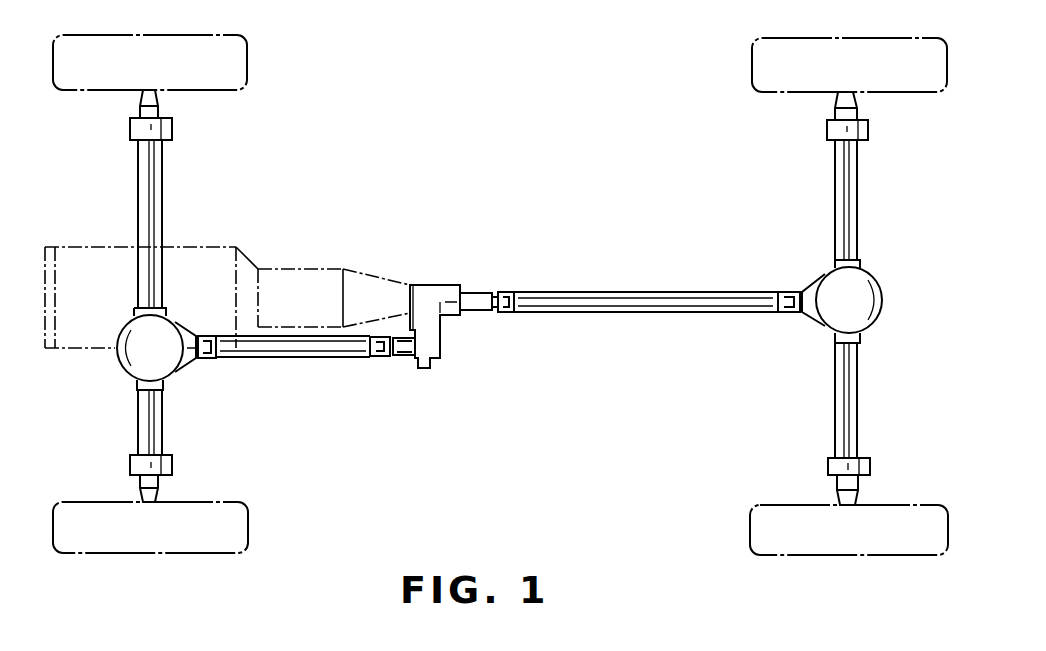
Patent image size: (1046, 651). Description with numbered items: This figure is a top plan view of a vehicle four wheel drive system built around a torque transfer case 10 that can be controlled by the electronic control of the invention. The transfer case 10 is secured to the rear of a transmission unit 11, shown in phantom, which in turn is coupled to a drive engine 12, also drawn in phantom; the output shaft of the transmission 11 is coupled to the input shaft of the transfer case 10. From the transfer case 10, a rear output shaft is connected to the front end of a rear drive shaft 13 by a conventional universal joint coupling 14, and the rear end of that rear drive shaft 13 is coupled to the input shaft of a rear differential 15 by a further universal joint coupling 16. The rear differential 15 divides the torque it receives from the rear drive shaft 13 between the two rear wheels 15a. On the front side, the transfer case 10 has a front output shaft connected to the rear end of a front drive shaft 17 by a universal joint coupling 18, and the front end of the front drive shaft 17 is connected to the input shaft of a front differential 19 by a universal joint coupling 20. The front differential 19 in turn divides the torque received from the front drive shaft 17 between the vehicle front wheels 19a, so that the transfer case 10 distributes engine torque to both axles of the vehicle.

The torque transfer case 10 is at (442, 280).
The transmission unit 11 is at (298, 268).
The drive engine 12 is at (207, 247).
The rear drive shaft 13 is at (620, 312).
The universal joint coupling 14 is at (502, 290).
The rear differential 15 is at (875, 290).
The rear wheels 15a is at (752, 62).
The universal joint coupling 16 is at (788, 290).
The front drive shaft 17 is at (340, 358).
The universal joint coupling 18 is at (385, 358).
The front differential 19 is at (133, 357).
The front wheels 19a is at (255, 50).
The universal joint coupling 20 is at (207, 360).